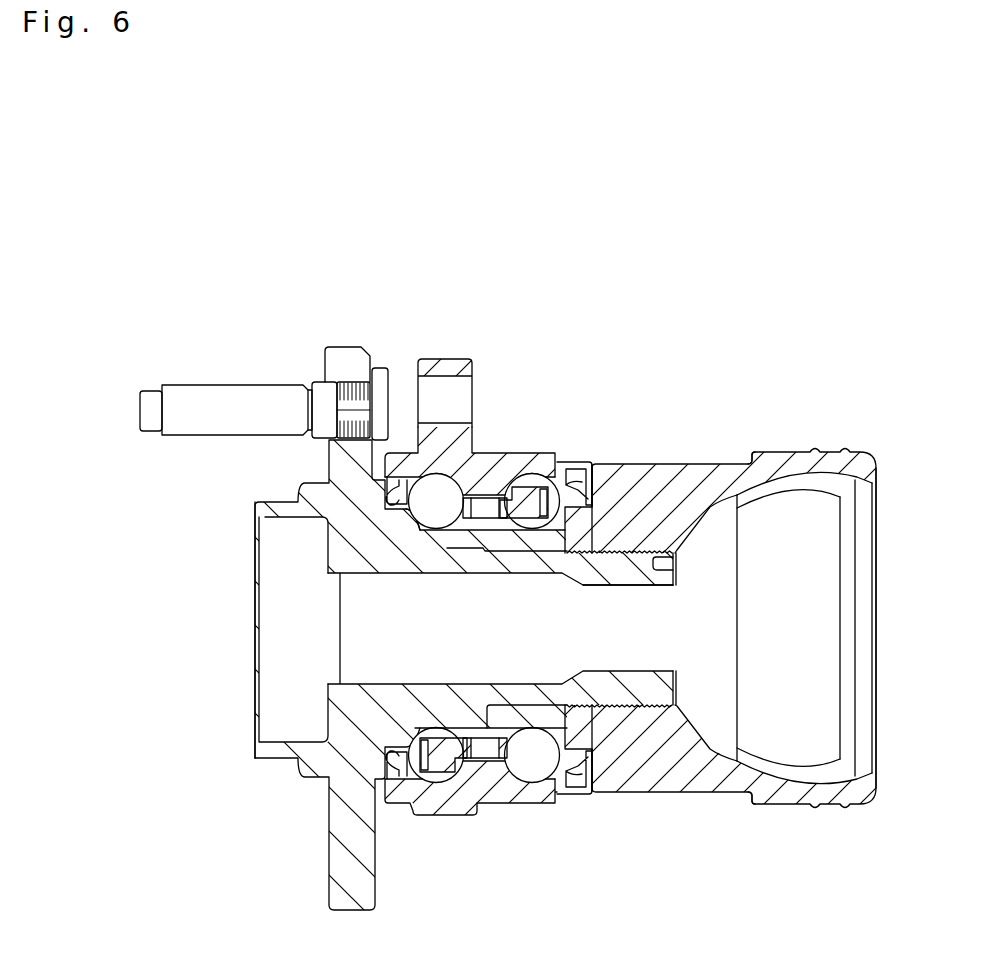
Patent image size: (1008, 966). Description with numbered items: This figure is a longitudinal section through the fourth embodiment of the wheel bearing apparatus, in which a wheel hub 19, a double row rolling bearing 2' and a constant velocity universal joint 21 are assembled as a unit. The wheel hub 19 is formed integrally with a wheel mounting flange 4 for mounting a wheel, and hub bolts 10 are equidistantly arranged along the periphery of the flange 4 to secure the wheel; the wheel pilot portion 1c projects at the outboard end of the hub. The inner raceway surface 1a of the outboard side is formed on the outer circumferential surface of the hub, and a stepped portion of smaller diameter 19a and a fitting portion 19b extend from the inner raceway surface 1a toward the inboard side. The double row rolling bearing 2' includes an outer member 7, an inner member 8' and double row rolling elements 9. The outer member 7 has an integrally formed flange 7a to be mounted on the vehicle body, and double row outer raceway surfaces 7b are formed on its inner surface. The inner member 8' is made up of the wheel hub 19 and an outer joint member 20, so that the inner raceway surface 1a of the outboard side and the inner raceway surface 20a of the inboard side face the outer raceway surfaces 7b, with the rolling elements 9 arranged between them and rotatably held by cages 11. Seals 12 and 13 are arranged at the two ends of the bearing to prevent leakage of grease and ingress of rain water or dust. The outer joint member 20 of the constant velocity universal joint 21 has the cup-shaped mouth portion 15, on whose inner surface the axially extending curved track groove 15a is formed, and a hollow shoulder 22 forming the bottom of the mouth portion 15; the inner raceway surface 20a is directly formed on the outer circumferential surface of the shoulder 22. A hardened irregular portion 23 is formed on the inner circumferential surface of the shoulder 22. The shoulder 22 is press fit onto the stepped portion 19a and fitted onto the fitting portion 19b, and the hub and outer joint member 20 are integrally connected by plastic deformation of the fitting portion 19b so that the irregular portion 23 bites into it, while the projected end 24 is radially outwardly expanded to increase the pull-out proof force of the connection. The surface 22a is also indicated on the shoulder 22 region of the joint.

The inner raceway surface of the outboard side 1a is at (301, 488).
The wheel pilot portion 1c is at (262, 768).
The double row rolling bearing 2' is at (597, 560).
The wheel mounting flange 4 is at (336, 347).
The outer member 7 is at (503, 462).
The flange 7a is at (448, 362).
The outer raceway surfaces 7b is at (424, 476).
The inner member 8' is at (429, 628).
The rolling elements 9 is at (527, 777).
The hub bolts 10 is at (203, 395).
The cages 11 is at (563, 463).
The seal 12 is at (405, 788).
The seal 13 is at (588, 778).
The mouth portion 15 is at (858, 466).
The track groove 15a is at (832, 488).
The wheel hub 19 is at (416, 514).
The stepped portion of smaller diameter 19a is at (486, 550).
The fitting portion 19b is at (624, 575).
The outer joint member 20 is at (768, 450).
The inner raceway surface of the inboard side 20a is at (538, 523).
The constant velocity universal joint 21 is at (814, 428).
The shoulder 22 is at (652, 480).
The stem inner surface 22a is at (708, 552).
The irregular portion 23 is at (658, 570).
The projected end 24 is at (692, 712).